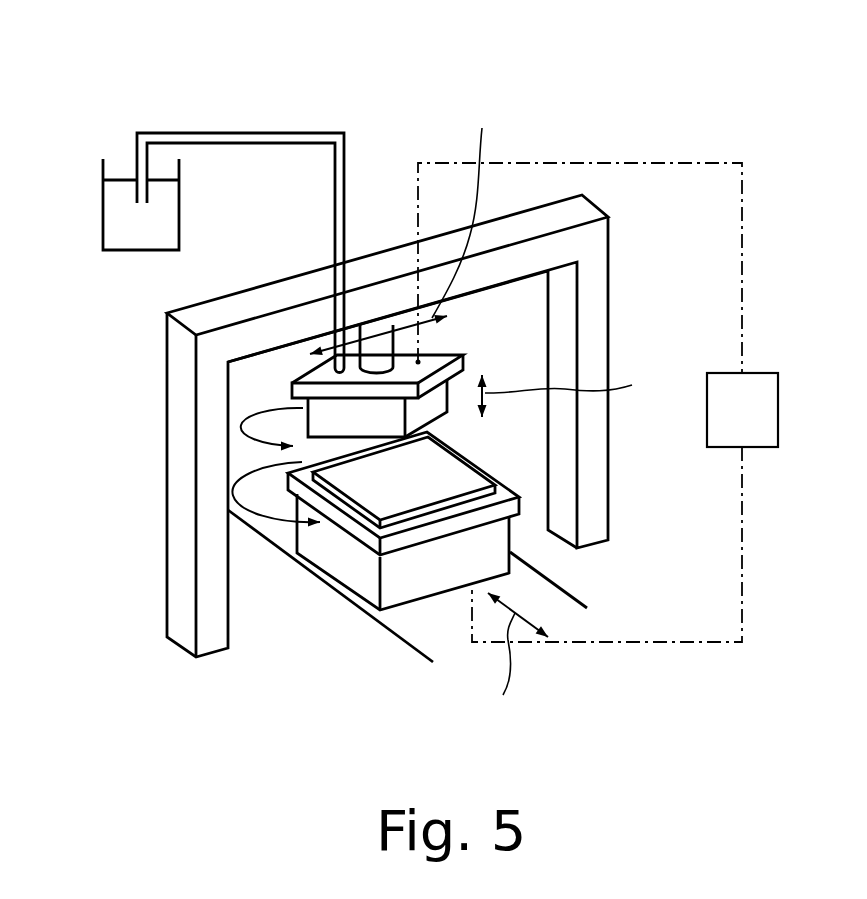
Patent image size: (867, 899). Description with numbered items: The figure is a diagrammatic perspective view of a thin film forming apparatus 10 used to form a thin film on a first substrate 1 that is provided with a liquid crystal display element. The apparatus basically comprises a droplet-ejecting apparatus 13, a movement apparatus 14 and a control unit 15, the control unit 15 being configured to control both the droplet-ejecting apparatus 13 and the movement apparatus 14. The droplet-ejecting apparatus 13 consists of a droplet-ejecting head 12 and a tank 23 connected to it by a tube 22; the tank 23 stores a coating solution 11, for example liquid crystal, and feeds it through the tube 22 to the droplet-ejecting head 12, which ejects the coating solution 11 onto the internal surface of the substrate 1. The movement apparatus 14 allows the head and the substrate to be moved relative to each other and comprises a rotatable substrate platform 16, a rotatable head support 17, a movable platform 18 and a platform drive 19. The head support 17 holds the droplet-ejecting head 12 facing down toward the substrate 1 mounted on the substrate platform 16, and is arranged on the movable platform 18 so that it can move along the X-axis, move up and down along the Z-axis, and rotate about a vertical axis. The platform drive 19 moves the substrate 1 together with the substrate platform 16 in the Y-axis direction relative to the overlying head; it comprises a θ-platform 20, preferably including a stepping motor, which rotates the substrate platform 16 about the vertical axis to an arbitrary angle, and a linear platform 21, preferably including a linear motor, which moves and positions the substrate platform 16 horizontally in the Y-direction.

The first substrate 1 is at (376, 500).
The thin film forming apparatus 10 is at (388, 112).
The coating solution 11 is at (168, 226).
The droplet-ejecting head 12 is at (450, 392).
The droplet-ejecting apparatus 13 is at (266, 383).
The movement apparatus 14 is at (275, 571).
The control unit 15 is at (778, 408).
The rotatable substrate platform 16 is at (513, 484).
The rotatable head support 17 is at (370, 342).
The movable platform 18 is at (168, 502).
The platform drive 19 is at (343, 715).
The θ-platform 20 is at (358, 585).
The linear platform 21 is at (413, 647).
The tube 22 is at (243, 133).
The tank 23 is at (102, 209).